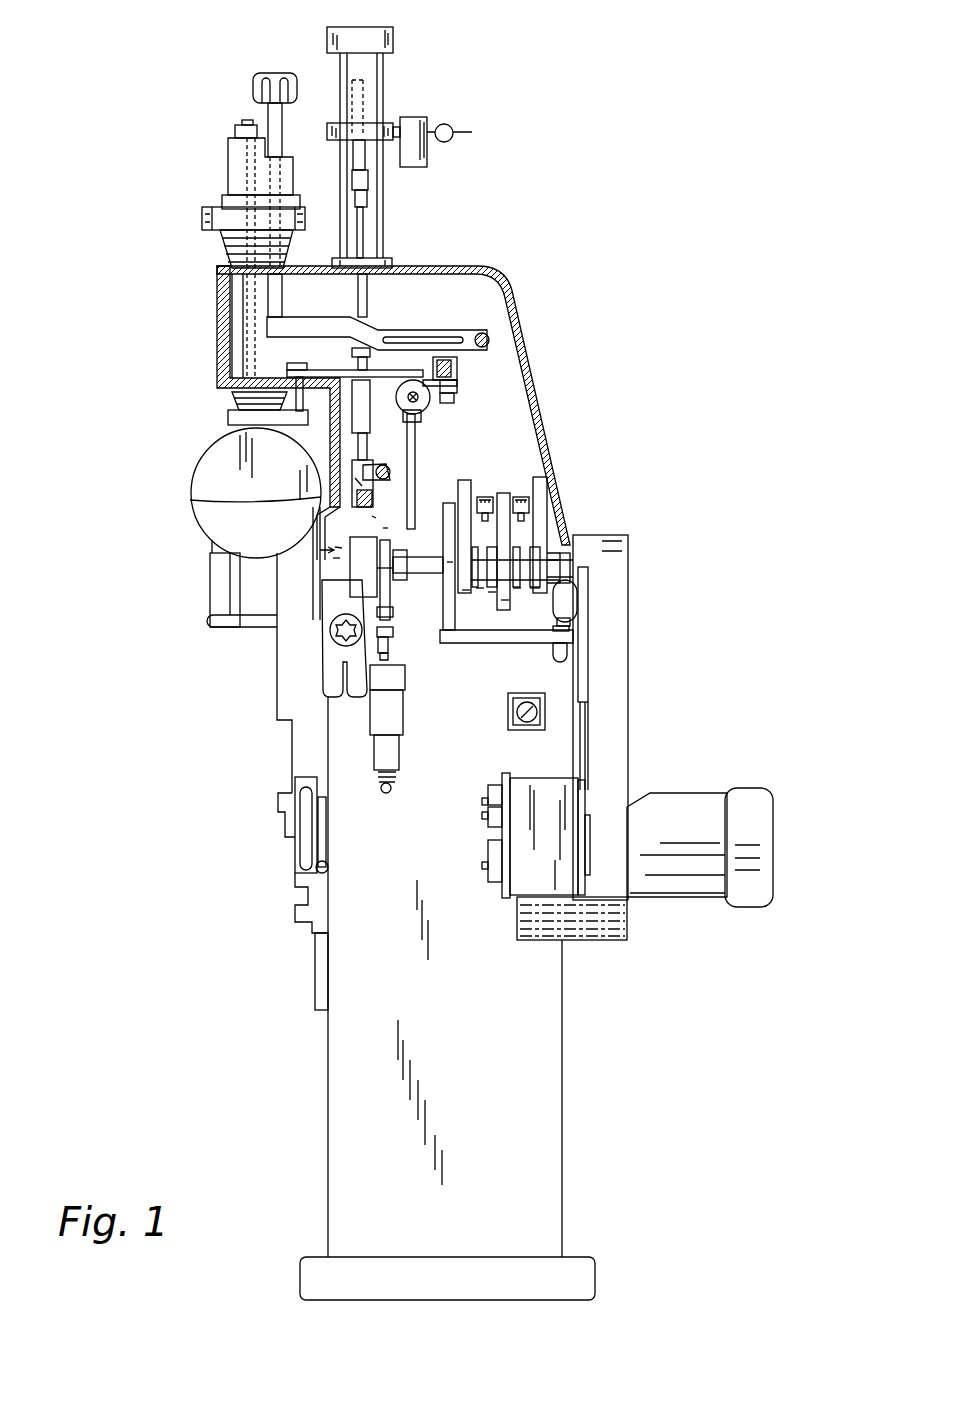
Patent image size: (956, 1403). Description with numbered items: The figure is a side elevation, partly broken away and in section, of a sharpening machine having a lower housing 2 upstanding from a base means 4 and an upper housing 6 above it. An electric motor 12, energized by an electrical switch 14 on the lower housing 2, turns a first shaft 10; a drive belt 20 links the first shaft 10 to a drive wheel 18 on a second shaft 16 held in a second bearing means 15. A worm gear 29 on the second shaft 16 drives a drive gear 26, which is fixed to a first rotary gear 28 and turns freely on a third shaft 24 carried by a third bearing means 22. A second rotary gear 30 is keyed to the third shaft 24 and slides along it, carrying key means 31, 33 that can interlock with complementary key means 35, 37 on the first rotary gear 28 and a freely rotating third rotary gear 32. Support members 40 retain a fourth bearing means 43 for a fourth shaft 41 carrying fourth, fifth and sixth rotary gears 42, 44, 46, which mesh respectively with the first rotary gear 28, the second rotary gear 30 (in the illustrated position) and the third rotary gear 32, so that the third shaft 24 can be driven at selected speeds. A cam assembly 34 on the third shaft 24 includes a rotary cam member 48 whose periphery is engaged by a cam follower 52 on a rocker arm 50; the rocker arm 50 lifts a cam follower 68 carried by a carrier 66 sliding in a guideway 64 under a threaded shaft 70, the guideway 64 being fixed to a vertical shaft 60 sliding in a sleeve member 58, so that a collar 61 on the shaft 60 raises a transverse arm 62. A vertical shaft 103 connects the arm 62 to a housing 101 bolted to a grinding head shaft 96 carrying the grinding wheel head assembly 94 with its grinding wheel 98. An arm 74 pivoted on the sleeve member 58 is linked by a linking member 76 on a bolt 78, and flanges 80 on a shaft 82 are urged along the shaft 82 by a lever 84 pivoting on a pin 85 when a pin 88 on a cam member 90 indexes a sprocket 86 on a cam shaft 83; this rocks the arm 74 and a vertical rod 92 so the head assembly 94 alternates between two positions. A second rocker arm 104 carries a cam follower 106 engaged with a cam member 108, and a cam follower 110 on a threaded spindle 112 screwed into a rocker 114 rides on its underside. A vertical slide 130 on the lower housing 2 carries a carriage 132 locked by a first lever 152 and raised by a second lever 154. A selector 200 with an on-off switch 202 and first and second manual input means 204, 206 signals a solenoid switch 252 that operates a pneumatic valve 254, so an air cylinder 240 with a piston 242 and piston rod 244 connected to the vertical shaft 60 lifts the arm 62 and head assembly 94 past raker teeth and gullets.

The lower housing 2 is at (328, 1125).
The base means 4 is at (300, 1278).
The upper housing 6 is at (498, 272).
The first shaft 10 is at (593, 855).
The electric motor 12 is at (700, 793).
The electrical switch 14 is at (531, 723).
The second bearing means 15 is at (568, 652).
The second shaft 16 is at (570, 629).
The drive wheel 18 is at (584, 692).
The drive belt 20 is at (588, 748).
The third bearing means 22 is at (576, 597).
The third shaft 24 is at (345, 585).
The drive gear 26 is at (448, 503).
The first rotary gear 28 is at (465, 590).
The worm gear 29 is at (450, 562).
The second rotary gear 30 is at (505, 600).
The key means 31 is at (492, 592).
The third rotary gear 32 is at (571, 621).
The key means 33 is at (517, 588).
The cam assembly 34 is at (317, 550).
The key means 35 is at (480, 588).
The key means 37 is at (535, 588).
The support members 40 is at (503, 493).
The fourth shaft 41 is at (480, 475).
The fourth rotary gear 42 is at (464, 480).
The fourth bearing means 43 is at (495, 497).
The fifth rotary gear 44 is at (490, 487).
The sixth rotary gear 46 is at (565, 530).
The rotary cam member 48 is at (347, 575).
The rocker arm 50 is at (338, 547).
The cam follower 52 is at (335, 558).
The sleeve member 58 is at (372, 418).
The vertical shaft 60 is at (364, 236).
The collar 61 is at (358, 352).
The arm 62 is at (395, 328).
The guideway 64 is at (355, 480).
The carrier 66 is at (372, 516).
The cam follower 68 is at (385, 528).
The threaded shaft 70 is at (376, 484).
The arm 74 is at (300, 370).
The linking member 76 is at (458, 386).
The bolt 78 is at (456, 366).
The flanges 80 is at (421, 409).
The shaft 82 is at (396, 397).
The cam shaft 83 is at (400, 550).
The lever 84 is at (416, 435).
The pin 85 is at (403, 462).
The sprocket 86 is at (350, 575).
The pin 88 is at (408, 572).
The cam member 90 is at (390, 596).
The vertical rod 92 is at (303, 395).
The grinding wheel head assembly 94 is at (278, 465).
The grinding head shaft 96 is at (245, 176).
The grinding wheel 98 is at (264, 537).
The housing 101 is at (232, 152).
The vertical shaft 103 is at (283, 117).
The second rocker arm 104 is at (340, 640).
The cam follower 106 is at (393, 632).
The cam member 108 is at (393, 612).
The cam follower 110 is at (388, 640).
The threaded spindle 112 is at (389, 655).
The rocker 114 is at (372, 700).
The vertical slide 130 is at (315, 966).
The carriage 132 is at (297, 915).
The first lever 152 is at (300, 845).
The second lever 154 is at (326, 833).
The selector 200 is at (565, 855).
The on-off switch 202 is at (488, 797).
The first manual input means 204 is at (488, 818).
The second manual input means 206 is at (488, 870).
The air cylinder 240 is at (393, 40).
The piston 242 is at (372, 62).
The piston rod 244 is at (378, 92).
The solenoid switch 252 is at (420, 117).
The pneumatic valve 254 is at (455, 125).